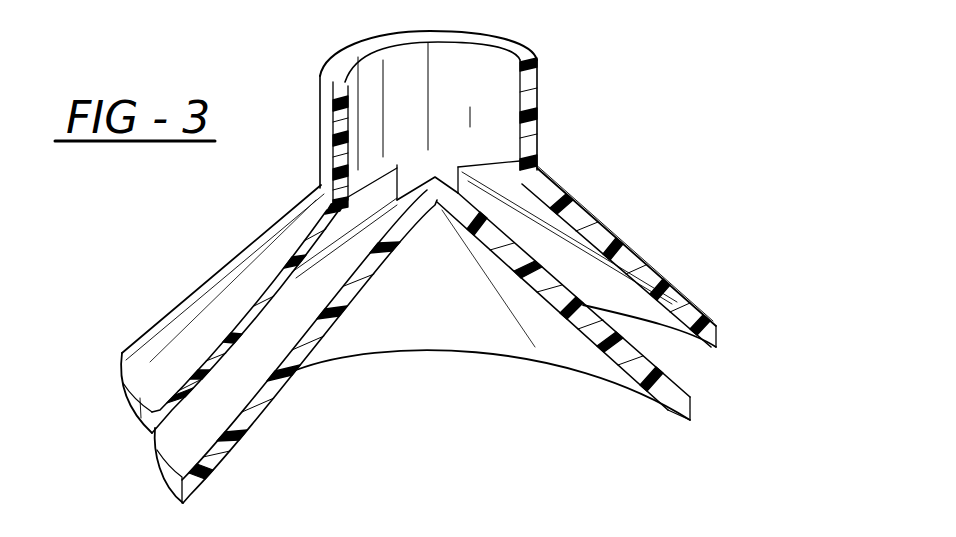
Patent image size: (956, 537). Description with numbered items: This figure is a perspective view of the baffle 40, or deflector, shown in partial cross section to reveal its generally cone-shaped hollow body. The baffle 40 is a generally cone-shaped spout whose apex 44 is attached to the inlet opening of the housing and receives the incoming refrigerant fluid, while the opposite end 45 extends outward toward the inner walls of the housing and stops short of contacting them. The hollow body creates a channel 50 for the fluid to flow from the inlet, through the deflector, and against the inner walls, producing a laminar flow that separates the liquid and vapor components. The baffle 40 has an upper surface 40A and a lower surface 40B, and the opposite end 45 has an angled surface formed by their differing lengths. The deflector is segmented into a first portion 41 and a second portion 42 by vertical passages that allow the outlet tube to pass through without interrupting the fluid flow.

The baffle 40 is at (660, 117).
The upper surface 40A is at (143, 378).
The lower surface 40B is at (263, 412).
The first portion 41 is at (220, 307).
The second portion 42 is at (617, 240).
The apex 44 is at (517, 53).
The opposite end 45 is at (717, 373).
The channel 50 is at (400, 100).